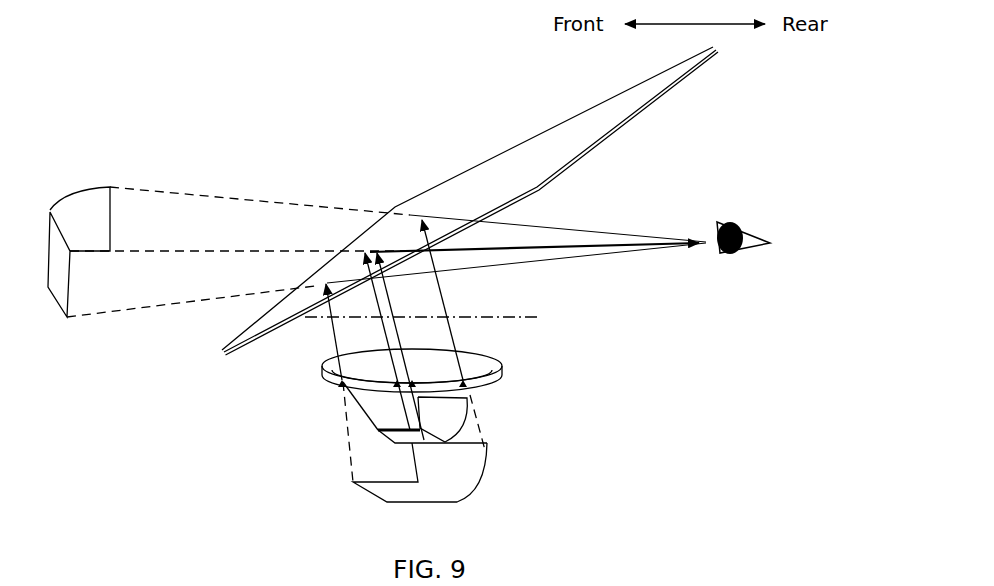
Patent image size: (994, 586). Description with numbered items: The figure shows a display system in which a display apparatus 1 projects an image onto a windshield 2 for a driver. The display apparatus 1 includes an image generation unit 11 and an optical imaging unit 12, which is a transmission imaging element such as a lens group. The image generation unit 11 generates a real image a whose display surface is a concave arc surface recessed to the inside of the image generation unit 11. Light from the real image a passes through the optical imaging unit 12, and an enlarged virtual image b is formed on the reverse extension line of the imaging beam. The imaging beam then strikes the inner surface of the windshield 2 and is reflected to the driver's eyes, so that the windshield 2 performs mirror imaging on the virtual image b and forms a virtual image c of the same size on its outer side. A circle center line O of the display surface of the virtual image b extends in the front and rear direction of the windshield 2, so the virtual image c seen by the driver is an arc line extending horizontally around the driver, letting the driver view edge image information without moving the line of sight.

The display apparatus 1 is at (466, 425).
The image generation unit 11 is at (503, 370).
The optical imaging unit 12 is at (446, 442).
The windshield 2 is at (510, 167).
The real image a is at (442, 419).
The virtual image b is at (420, 472).
The virtual image c is at (79, 252).
The circle center line O is at (422, 302).